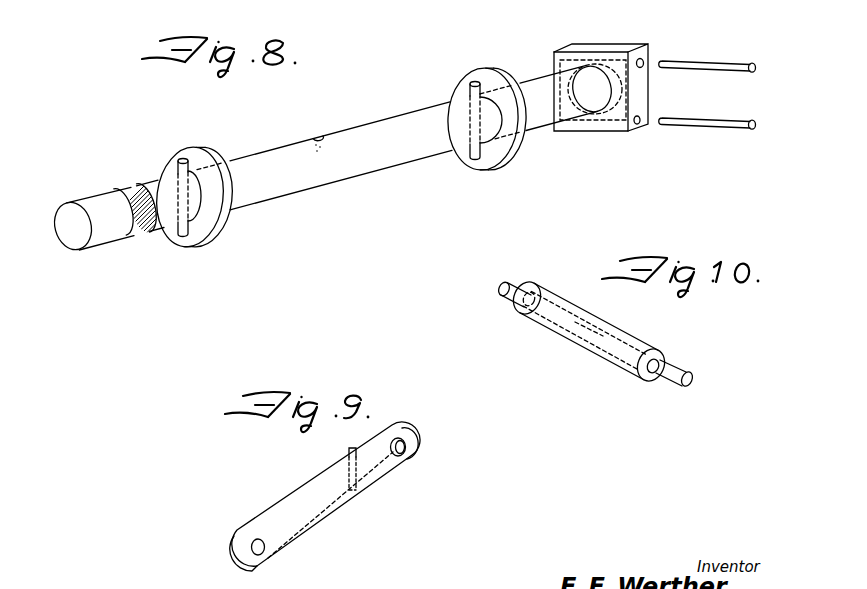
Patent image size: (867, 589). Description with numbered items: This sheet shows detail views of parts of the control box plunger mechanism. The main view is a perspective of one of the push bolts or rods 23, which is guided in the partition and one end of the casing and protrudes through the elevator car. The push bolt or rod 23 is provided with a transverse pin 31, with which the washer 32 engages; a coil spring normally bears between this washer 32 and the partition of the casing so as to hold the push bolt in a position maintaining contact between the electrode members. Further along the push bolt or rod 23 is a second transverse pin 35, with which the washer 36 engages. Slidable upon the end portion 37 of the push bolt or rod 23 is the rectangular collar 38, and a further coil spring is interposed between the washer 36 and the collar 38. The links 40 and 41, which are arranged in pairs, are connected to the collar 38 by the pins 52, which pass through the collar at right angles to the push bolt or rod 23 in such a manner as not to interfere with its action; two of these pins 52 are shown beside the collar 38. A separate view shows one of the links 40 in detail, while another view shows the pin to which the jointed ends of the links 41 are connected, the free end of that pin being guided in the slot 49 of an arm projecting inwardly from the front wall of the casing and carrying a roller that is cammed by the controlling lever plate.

In FIG. 8, the push bolt or rod 23 is at (382, 127).
In FIG. 8, the transverse pin 31 is at (177, 161).
In FIG. 8, the washer 32 is at (206, 160).
In FIG. 8, the transverse pin 35 is at (468, 83).
In FIG. 8, the washer 36 is at (497, 77).
In FIG. 8, the end portion of push bolt or rod 37 is at (543, 124).
In FIG. 8, the collar 38 is at (643, 88).
In FIG. 8, the pin 52 is at (736, 60).
In FIG. 10, the link 41 is at (639, 340).
In FIG. 10, the slot 49 is at (615, 372).
In FIG. 9, the link 40 is at (320, 516).